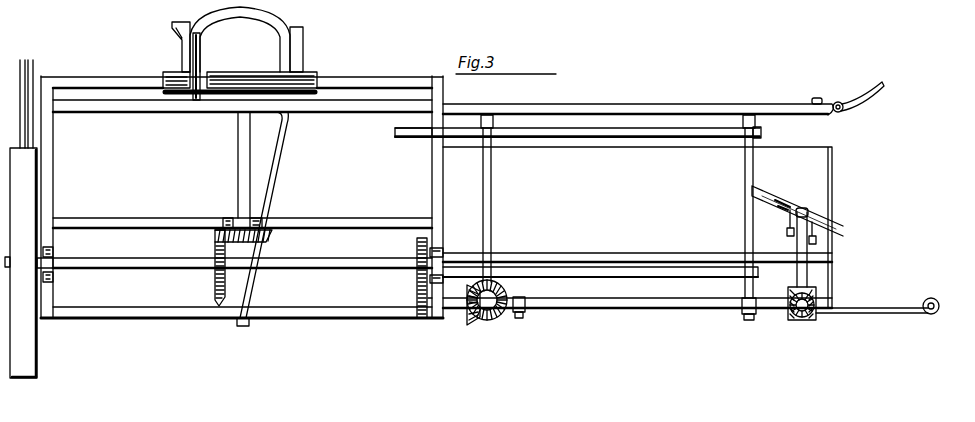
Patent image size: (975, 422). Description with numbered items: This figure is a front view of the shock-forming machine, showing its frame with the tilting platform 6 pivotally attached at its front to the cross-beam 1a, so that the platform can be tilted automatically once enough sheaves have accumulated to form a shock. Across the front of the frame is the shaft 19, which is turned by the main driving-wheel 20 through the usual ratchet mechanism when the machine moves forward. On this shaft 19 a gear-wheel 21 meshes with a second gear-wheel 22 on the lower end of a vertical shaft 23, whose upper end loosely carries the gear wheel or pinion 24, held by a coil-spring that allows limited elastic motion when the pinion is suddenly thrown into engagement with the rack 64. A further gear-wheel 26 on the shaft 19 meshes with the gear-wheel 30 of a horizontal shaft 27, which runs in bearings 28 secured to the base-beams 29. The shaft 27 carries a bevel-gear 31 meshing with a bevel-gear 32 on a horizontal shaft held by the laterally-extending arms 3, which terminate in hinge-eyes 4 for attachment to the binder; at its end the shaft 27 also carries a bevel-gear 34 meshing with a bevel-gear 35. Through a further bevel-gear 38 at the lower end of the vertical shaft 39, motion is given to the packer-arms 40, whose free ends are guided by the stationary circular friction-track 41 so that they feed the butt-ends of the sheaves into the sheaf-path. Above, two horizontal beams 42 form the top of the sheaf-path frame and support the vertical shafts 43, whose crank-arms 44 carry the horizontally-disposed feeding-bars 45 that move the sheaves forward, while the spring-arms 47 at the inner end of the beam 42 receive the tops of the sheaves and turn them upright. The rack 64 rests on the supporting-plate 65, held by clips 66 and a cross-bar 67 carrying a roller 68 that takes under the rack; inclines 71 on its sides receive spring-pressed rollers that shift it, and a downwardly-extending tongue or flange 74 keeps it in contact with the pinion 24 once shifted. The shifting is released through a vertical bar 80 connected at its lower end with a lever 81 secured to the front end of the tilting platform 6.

The cross-beam 1a is at (163, 305).
The laterally-extending arms 3 is at (880, 310).
The hinge-eyes 4 is at (932, 314).
The tilting platform 6 is at (168, 318).
The shaft 19 is at (113, 258).
The main driving-wheel 20 is at (37, 360).
The gear-wheel 21 is at (215, 250).
The second gear-wheel 22 is at (262, 240).
The vertical shaft 23 is at (220, 165).
The gear wheel or pinion 24 is at (215, 99).
The second gear-wheel 26 is at (417, 246).
The horizontal shaft 27 is at (648, 312).
The bearings 28 is at (526, 310).
The base-beams 29 is at (518, 318).
The gear-wheel 30 is at (408, 302).
The bevel-gear 31 is at (466, 320).
The bevel-gear 32 is at (505, 288).
The bevel-gear 34 is at (798, 320).
The bevel-gear 35 is at (818, 304).
The bevel-gear 38 is at (815, 292).
The vertical shaft 39 is at (797, 272).
The packer-arms 40 is at (843, 232).
The stationary circular friction-track 41 is at (788, 232).
The horizontal beams 42 is at (638, 98).
The vertical shafts 43 is at (492, 225).
The crank-arms 44 is at (492, 137).
The horizontally-disposed feeding-bars 45 is at (645, 146).
The spring-arms 47 is at (880, 92).
The rack 64 is at (246, 39).
The supporting-plate 65 is at (106, 112).
The clips 66 is at (185, 4).
The cross-bar 67 is at (242, 71).
The roller 68 is at (318, 72).
The inclines 71 is at (181, 52).
The downwardly-extending tongue or flange 74 is at (201, 62).
The vertical bar 80 is at (277, 162).
The lever 81 is at (239, 334).